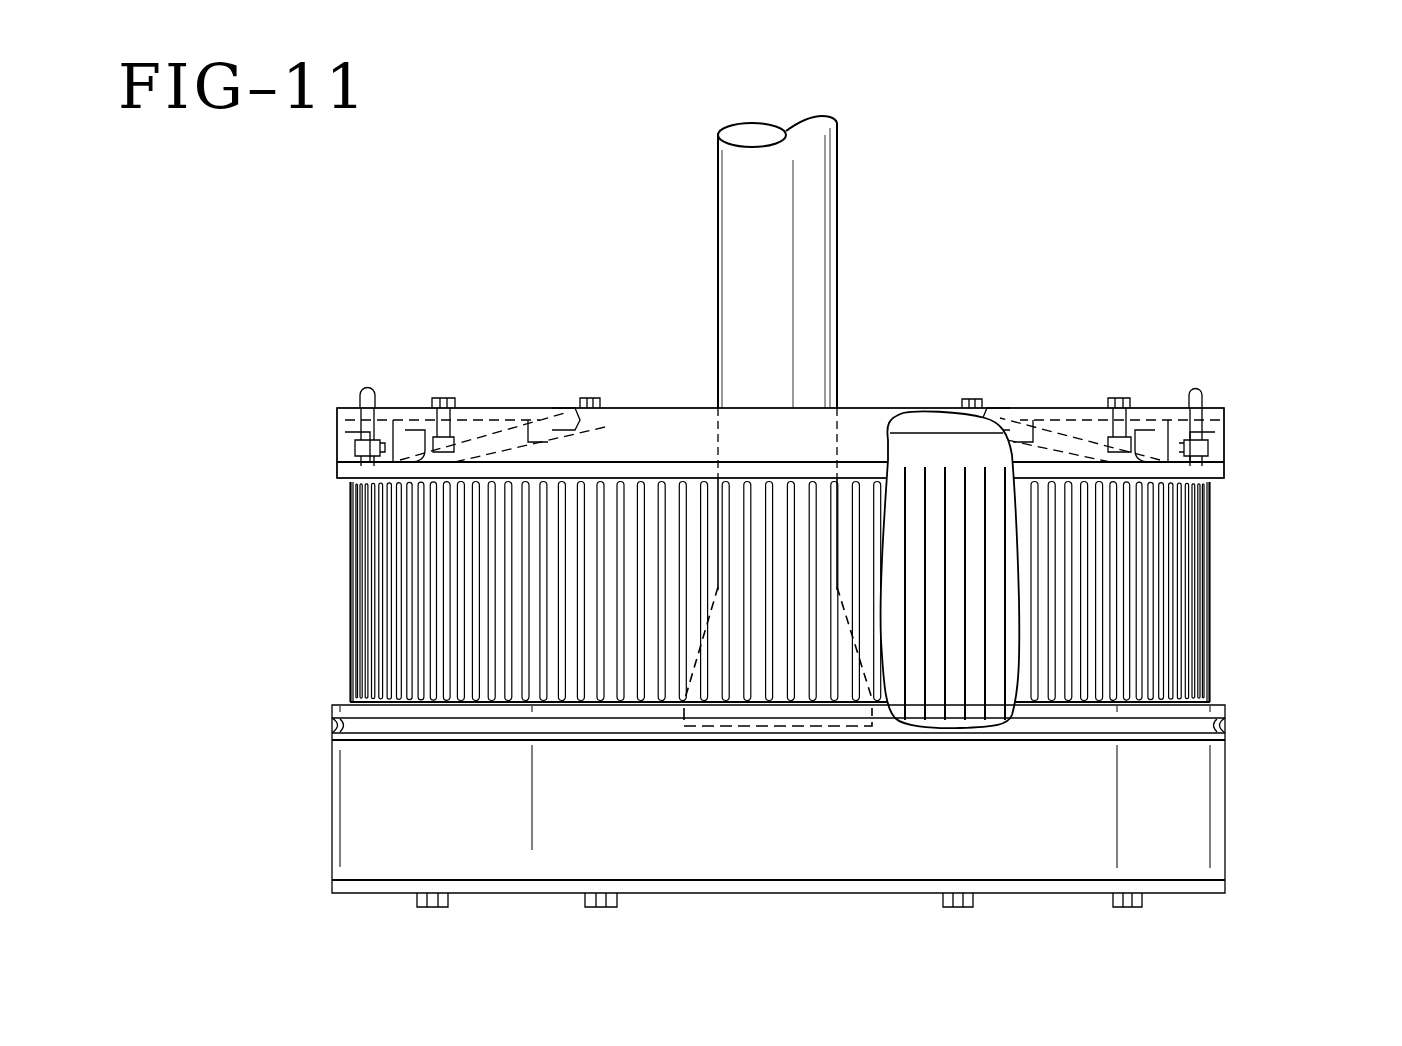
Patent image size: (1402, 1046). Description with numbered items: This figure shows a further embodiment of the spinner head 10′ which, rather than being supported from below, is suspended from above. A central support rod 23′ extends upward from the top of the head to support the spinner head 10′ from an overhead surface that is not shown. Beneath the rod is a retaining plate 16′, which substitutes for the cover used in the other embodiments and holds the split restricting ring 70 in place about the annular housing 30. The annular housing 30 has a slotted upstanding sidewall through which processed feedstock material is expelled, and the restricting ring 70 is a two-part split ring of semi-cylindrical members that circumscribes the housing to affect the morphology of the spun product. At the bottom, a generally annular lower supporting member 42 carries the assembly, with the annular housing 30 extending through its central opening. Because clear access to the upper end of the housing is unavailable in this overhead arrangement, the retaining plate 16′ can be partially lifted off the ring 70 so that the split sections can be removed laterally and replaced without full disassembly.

The spinner head 10′ is at (463, 342).
The retaining plate 16′ is at (868, 420).
The central support rod 23′ is at (817, 205).
The annular housing 30 is at (943, 447).
The lower supporting member 42 is at (1225, 708).
The restricting ring 70 is at (392, 563).